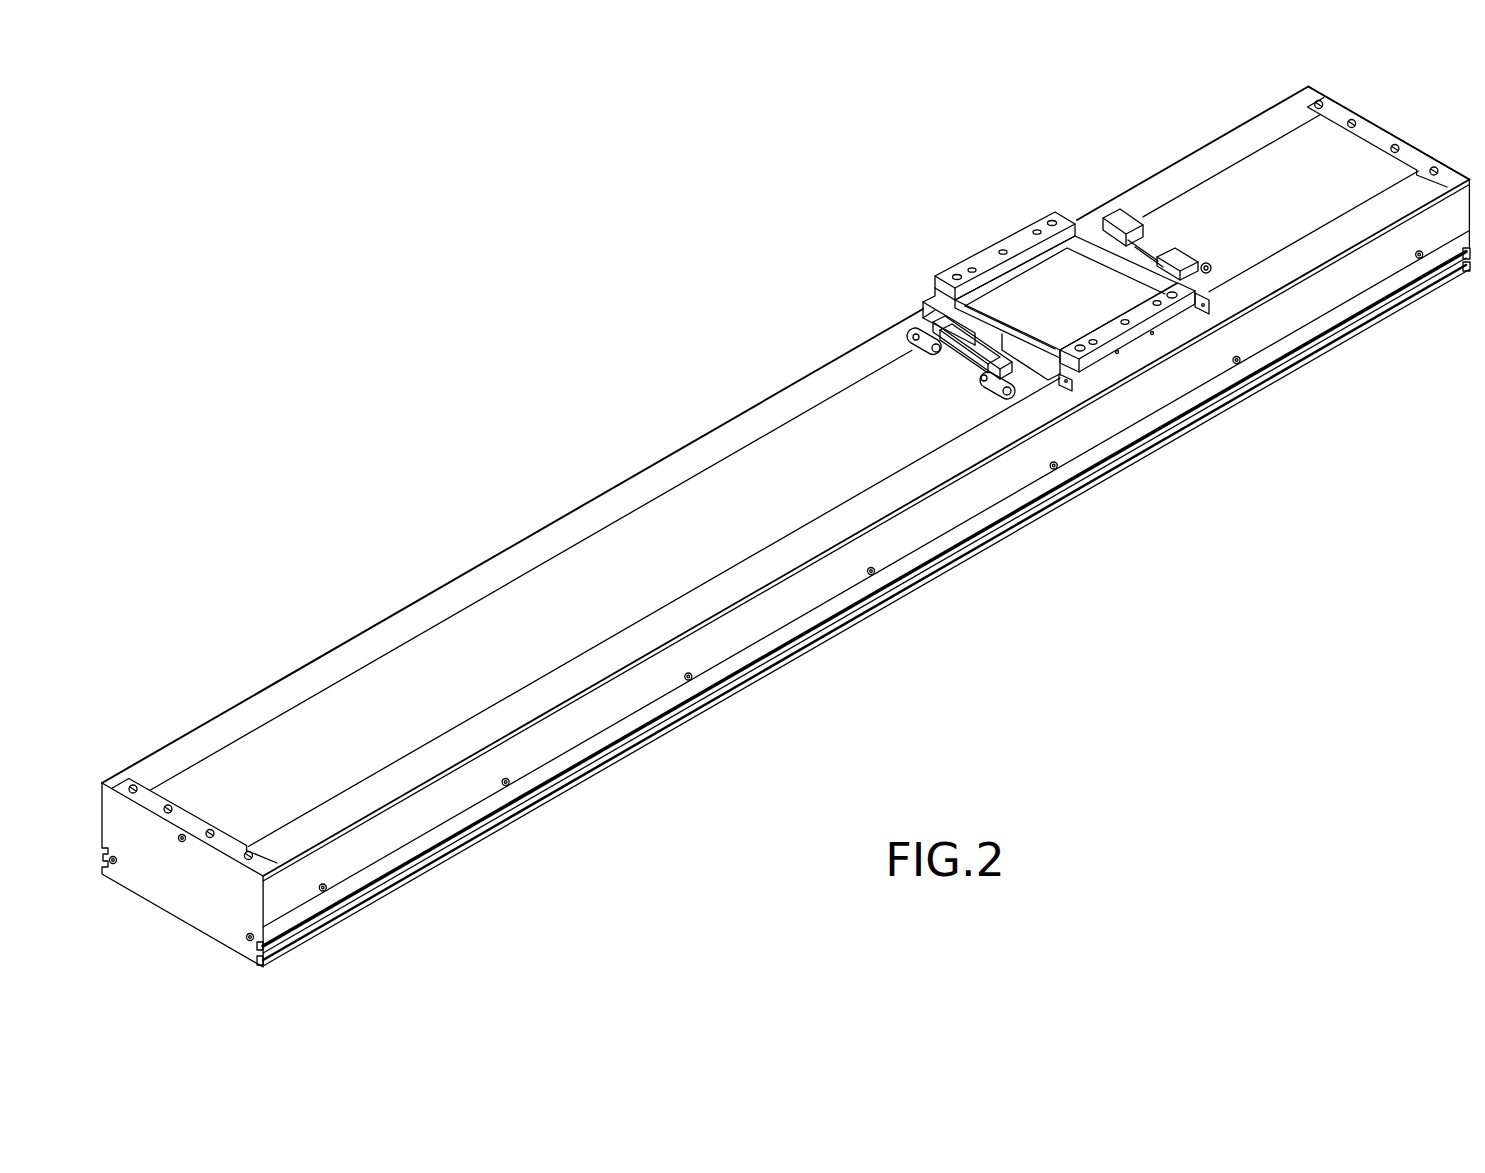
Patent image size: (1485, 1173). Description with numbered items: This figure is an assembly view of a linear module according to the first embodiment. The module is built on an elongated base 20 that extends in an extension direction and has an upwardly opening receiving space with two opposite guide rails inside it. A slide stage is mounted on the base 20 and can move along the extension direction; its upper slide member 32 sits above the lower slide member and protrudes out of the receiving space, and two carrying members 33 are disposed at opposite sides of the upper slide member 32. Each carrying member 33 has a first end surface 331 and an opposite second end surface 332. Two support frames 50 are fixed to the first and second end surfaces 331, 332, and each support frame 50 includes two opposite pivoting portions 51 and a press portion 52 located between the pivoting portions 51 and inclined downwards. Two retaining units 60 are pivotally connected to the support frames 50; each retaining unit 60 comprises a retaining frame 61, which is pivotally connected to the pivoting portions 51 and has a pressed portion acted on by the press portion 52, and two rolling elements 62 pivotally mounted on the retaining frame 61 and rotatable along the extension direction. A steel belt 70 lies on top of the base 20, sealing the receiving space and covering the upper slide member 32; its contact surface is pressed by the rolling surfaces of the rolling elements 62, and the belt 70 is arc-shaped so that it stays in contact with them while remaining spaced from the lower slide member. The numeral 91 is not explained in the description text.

The base 20 is at (1363, 280).
The top cover rim 91 is at (1355, 165).
The steel belt 70 is at (1238, 162).
The upper slide member 32 is at (1053, 278).
The carrying members 33 is at (988, 258).
The first end surface 331 is at (1072, 390).
The second end surface 332 is at (1205, 310).
The support frames 50 is at (927, 293).
The pivoting portions 51 is at (1040, 385).
The press portion 52 is at (972, 355).
The retaining units 60 is at (927, 362).
The retaining frame 61 is at (922, 322).
The rolling elements 62 is at (993, 390).